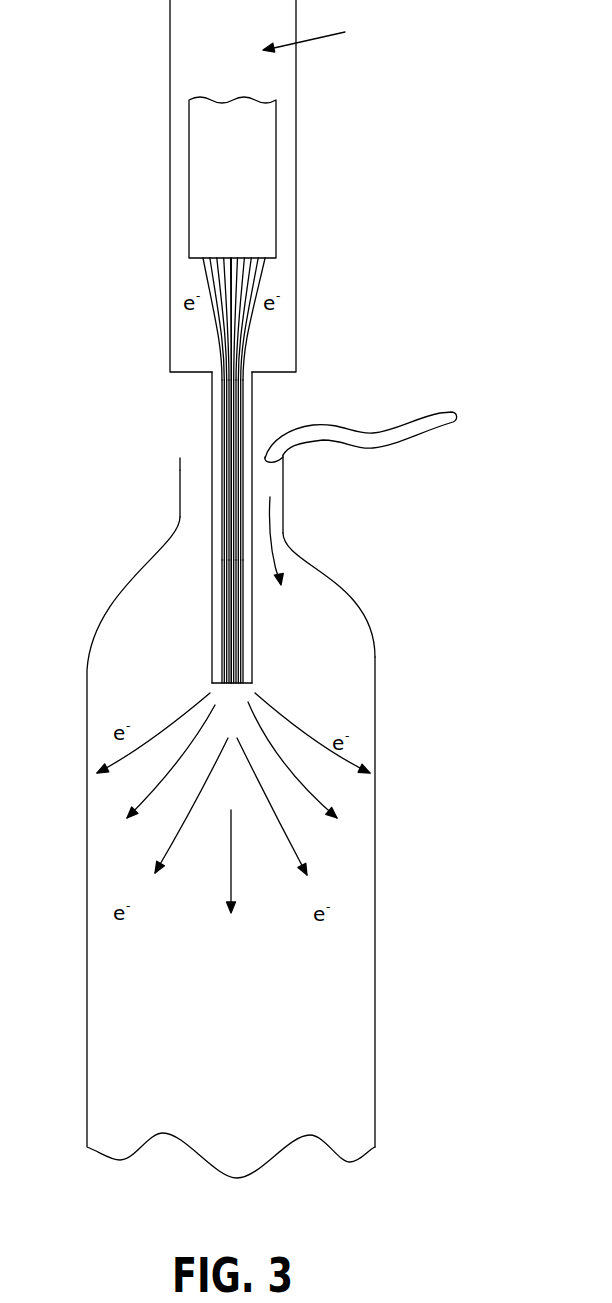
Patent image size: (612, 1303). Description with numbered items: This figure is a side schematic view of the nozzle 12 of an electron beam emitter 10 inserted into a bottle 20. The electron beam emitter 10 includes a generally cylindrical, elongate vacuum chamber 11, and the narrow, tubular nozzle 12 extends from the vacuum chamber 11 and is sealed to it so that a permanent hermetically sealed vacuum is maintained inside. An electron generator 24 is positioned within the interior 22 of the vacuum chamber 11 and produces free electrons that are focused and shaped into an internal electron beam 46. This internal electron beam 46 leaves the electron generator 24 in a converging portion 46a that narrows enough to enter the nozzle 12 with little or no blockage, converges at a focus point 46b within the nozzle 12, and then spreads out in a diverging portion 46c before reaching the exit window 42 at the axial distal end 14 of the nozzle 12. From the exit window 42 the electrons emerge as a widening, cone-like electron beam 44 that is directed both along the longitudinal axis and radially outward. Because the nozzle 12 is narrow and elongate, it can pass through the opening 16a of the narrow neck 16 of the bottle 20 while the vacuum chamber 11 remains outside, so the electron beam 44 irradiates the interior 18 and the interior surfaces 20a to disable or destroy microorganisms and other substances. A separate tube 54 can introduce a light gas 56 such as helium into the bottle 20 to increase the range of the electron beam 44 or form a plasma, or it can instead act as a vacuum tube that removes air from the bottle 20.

The electron beam emitter 10 is at (296, 147).
The vacuum chamber 11 is at (296, 225).
The nozzle 12 is at (253, 404).
The axial distal end 14 is at (222, 688).
The neck 16 is at (283, 488).
The opening 16a is at (180, 473).
The interior 18 is at (332, 663).
The bottle 20 is at (363, 600).
The interior surfaces 20a is at (375, 1002).
The interior 22 is at (323, 35).
The electron generator 24 is at (225, 188).
The exit window 42 is at (243, 703).
The electron beam 44 is at (232, 868).
The internal electron beam 46 is at (237, 347).
The converging portion 46a is at (218, 334).
The convergence point 46b is at (224, 473).
The diverging portion 46c is at (218, 628).
The tube 54 is at (428, 429).
The light gas 56 is at (283, 533).